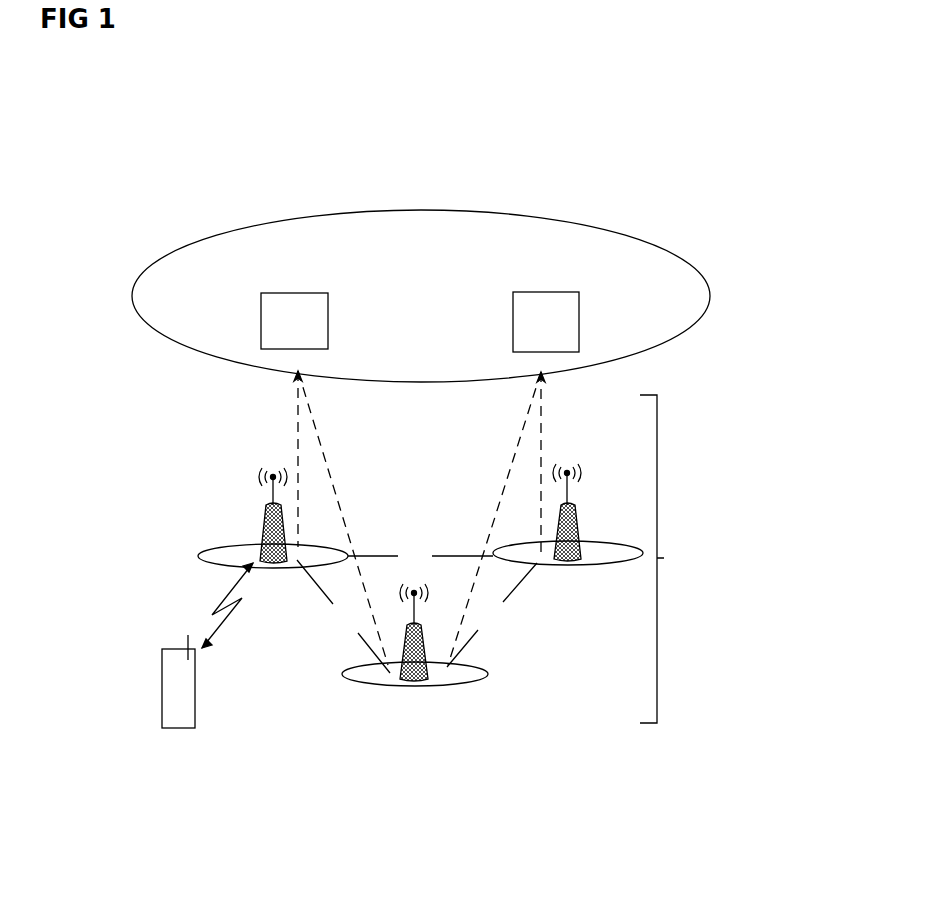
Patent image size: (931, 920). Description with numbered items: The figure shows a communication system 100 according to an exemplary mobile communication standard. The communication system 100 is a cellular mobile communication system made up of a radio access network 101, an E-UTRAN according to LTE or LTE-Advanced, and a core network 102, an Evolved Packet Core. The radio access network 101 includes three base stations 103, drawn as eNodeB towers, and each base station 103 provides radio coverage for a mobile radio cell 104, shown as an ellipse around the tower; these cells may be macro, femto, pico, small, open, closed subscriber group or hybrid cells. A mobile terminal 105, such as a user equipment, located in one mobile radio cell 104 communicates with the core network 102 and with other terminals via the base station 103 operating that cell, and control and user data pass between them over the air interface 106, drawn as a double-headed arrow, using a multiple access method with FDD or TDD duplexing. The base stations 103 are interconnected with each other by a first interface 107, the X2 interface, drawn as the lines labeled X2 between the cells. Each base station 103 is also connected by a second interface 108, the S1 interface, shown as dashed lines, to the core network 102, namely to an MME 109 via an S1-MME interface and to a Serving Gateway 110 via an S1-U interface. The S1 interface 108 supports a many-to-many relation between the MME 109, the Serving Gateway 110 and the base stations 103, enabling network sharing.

The communication system 100 is at (687, 150).
The radio access network 101 is at (741, 540).
The core network 102 is at (700, 270).
The base station 103 is at (265, 513).
The mobile radio cell 104 is at (208, 560).
The mobile terminal 105 is at (178, 730).
The air interface 106 is at (243, 616).
The first interface 107 is at (335, 630).
The second interface 108 is at (297, 420).
The MME 109 is at (292, 292).
The Serving Gateway 110 is at (545, 292).